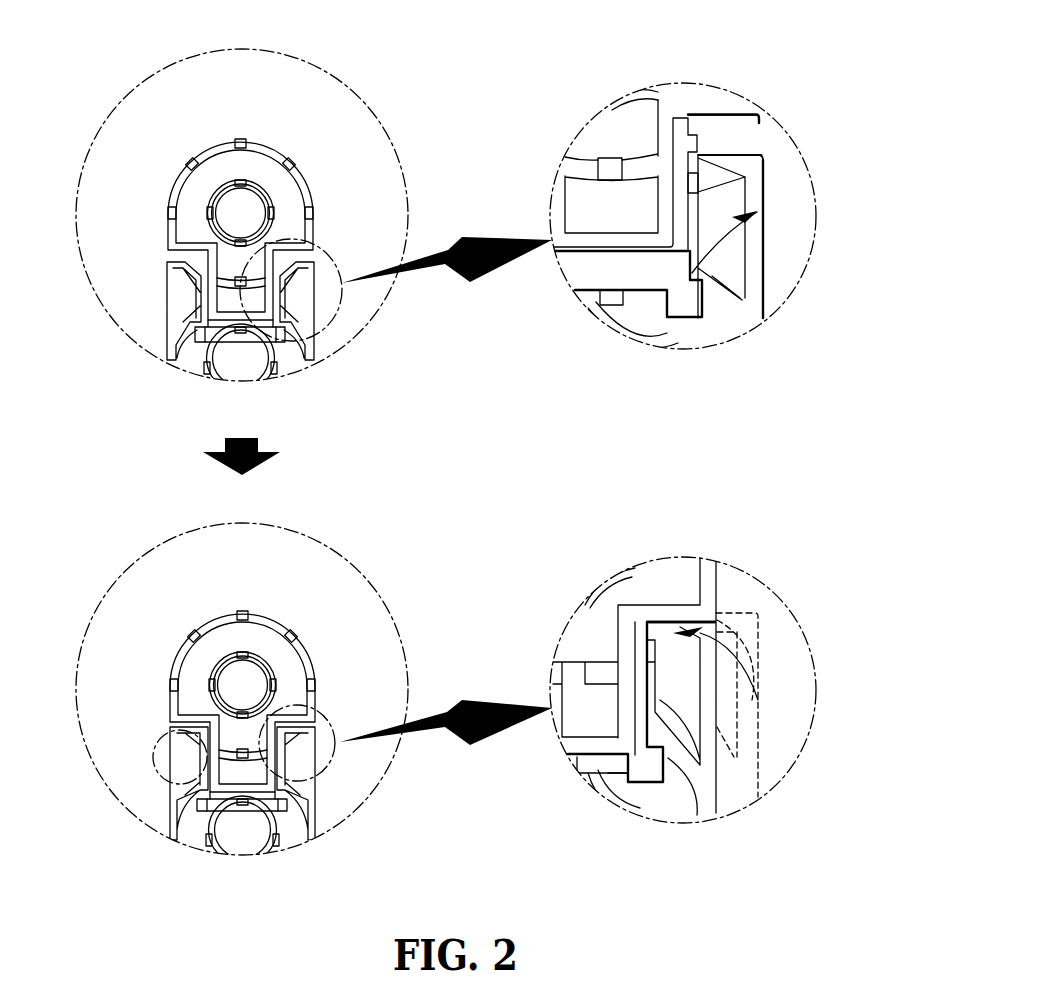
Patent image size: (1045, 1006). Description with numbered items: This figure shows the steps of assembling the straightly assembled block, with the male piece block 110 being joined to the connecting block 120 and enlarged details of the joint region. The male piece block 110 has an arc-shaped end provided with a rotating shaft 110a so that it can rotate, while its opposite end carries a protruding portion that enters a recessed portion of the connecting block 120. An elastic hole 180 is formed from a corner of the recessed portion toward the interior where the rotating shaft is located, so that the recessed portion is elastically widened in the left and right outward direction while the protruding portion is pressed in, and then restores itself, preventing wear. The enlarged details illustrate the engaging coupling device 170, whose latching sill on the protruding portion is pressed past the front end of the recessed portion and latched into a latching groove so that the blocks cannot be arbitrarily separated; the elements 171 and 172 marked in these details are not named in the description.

The male piece block 110 is at (170, 140).
The rotating shaft 110a is at (257, 188).
The connecting block 120 is at (143, 322).
The engaging coupling device 170 is at (857, 88).
The coupling protrusion 171 is at (743, 167).
The hook portion 172 is at (698, 147).
The elastic hole 180 is at (303, 312).